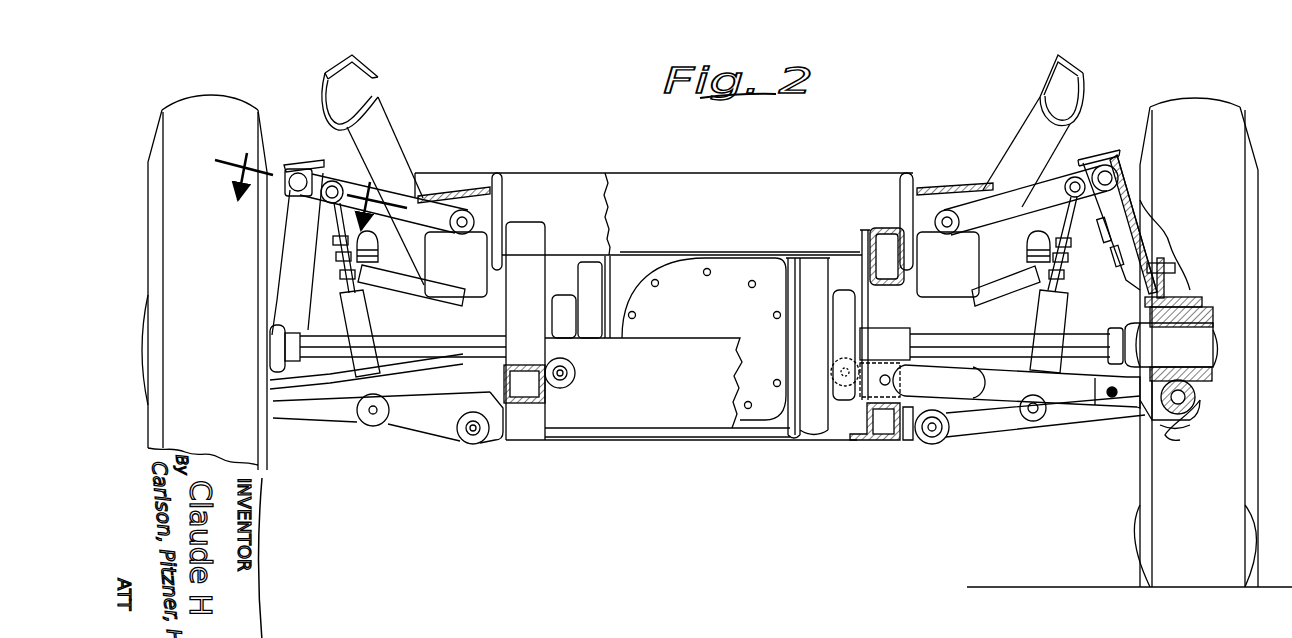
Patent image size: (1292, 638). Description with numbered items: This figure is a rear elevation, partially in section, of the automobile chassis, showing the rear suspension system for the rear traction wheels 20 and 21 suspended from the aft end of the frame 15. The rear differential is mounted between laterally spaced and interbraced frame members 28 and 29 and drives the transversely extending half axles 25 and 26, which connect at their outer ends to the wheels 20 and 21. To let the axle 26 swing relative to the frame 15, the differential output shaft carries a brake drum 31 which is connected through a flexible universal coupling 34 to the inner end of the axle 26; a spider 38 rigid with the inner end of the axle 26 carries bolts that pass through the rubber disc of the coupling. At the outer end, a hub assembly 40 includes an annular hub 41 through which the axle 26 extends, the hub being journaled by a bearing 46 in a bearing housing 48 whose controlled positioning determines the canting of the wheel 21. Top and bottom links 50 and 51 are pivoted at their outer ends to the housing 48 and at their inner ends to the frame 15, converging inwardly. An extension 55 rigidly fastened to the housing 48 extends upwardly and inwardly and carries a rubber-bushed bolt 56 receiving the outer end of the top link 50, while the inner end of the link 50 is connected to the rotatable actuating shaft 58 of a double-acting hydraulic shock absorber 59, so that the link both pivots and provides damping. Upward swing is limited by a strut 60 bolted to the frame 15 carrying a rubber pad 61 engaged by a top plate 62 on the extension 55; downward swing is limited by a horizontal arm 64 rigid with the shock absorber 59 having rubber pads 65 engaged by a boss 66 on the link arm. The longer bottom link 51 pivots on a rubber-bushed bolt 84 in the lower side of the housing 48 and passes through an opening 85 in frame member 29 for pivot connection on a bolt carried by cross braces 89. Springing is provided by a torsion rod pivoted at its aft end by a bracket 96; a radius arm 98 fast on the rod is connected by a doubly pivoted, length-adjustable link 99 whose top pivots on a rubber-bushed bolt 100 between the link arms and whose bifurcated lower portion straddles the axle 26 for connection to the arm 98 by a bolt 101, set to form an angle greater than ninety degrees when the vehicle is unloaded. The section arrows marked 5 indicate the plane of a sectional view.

The rear traction wheel 20 is at (194, 104).
The rear traction wheel 21 is at (1238, 105).
The frame member 28 is at (543, 234).
The double-acting hydraulic shock absorber 59 is at (455, 192).
The strut 60 is at (384, 129).
The rubber pad 61 is at (326, 106).
The section line 5- 5 is at (310, 195).
The top link 50 is at (1050, 183).
The actuating shaft 58 is at (471, 220).
The rubber-bushed bolt 100 is at (1076, 177).
The boss 66 is at (1055, 197).
The rubber pad 65 is at (378, 243).
The doubly pivoted link 99 is at (346, 310).
The horizontal arm 64 is at (398, 278).
The extension 55 is at (287, 238).
The top plate 62 is at (1107, 156).
The rubber-bushed bolt 56 is at (1112, 175).
The half axle 25 is at (410, 343).
The half axle 26 is at (1008, 343).
The cross brace 89 is at (703, 346).
The brake drum 31 is at (591, 266).
The flexible universal coupling 34 is at (562, 298).
The spider 38 is at (896, 337).
The frame 15 is at (857, 236).
The frame member 29 is at (883, 227).
The opening 85 is at (890, 410).
The bottom link 51 is at (1075, 405).
The radius arm 98 is at (993, 426).
The bracket 96 is at (929, 444).
The bolt 101 is at (1036, 418).
The hub assembly 40 is at (1178, 336).
The bearing housing 48 is at (1170, 298).
The annular hub 41 is at (1206, 373).
The bearing 46 is at (1192, 397).
The rubber-bushed bolt 84 is at (1183, 408).